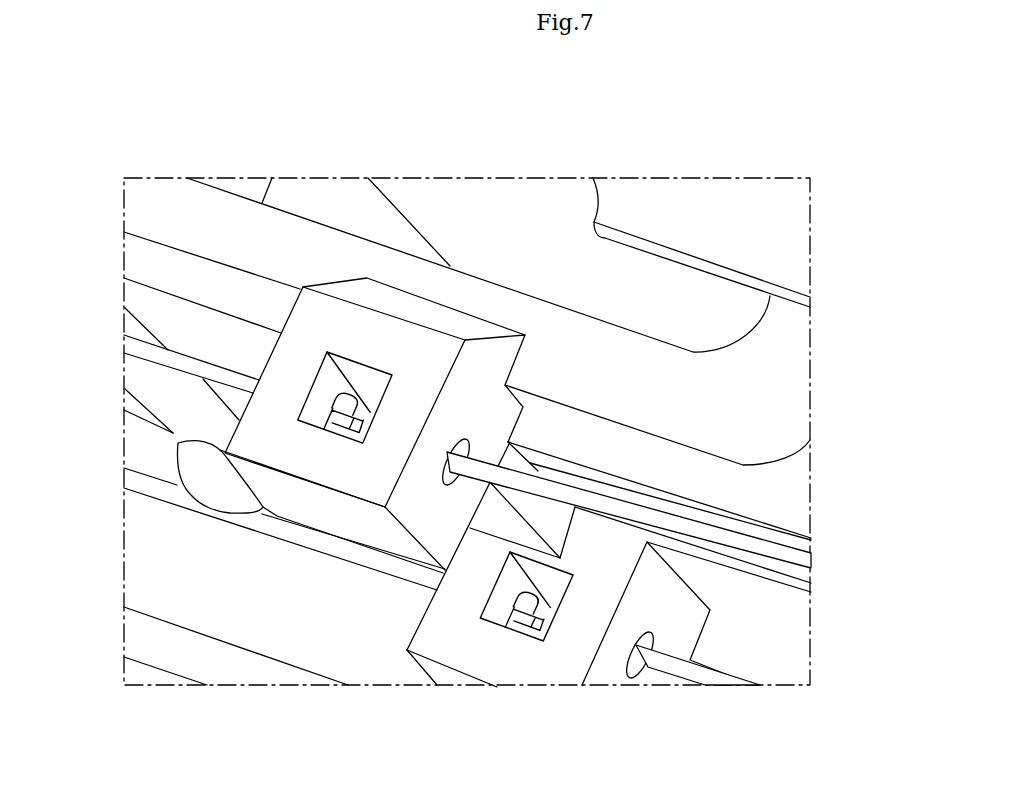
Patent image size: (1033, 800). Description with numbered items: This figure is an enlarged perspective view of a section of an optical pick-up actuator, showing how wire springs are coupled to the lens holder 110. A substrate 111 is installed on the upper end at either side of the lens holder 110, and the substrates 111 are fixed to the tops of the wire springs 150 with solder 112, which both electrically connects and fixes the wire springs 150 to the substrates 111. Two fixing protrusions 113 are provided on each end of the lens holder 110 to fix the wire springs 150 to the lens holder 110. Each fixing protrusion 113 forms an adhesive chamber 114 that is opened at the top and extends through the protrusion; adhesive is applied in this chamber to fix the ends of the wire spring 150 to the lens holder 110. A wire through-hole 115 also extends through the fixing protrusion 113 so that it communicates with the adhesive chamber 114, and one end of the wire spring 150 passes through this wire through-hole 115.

The lens holder 110 is at (791, 391).
The substrate 111 is at (173, 434).
The solder 112 is at (202, 489).
The fixing protrusion 113 is at (334, 458).
The adhesive chamber 114 is at (328, 393).
The wire through-hole 115 is at (458, 483).
The wire spring 150 is at (757, 562).